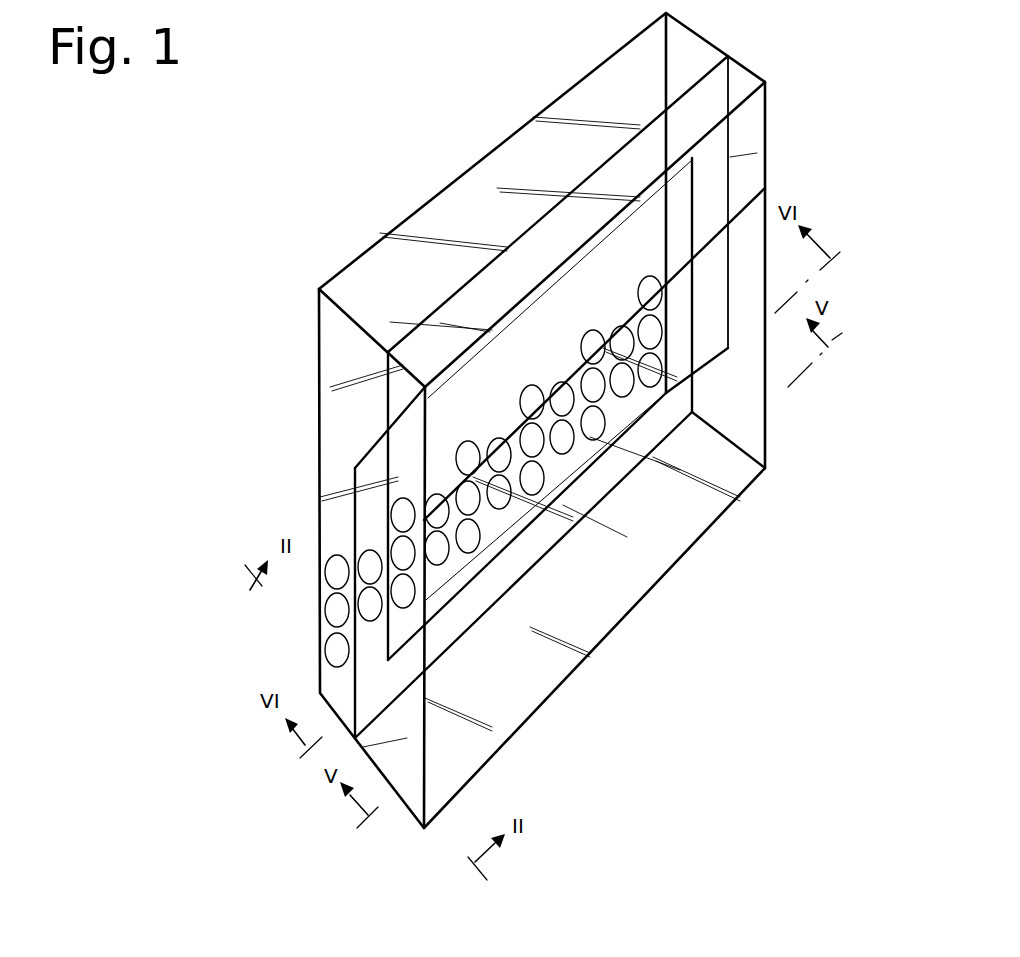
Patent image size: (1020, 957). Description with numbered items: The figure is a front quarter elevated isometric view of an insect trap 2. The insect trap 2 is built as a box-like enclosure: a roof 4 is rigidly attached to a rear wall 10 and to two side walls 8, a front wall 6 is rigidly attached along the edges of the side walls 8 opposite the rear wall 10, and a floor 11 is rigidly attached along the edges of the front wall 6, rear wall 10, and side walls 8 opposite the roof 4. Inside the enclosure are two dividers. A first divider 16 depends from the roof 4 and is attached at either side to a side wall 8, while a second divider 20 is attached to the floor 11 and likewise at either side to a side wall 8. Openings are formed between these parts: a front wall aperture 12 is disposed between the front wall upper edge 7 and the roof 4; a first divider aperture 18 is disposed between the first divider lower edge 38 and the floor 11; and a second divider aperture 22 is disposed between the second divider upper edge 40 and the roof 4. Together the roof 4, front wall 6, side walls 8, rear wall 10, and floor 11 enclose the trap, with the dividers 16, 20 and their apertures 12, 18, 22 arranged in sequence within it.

The insect trap 2 is at (160, 254).
The roof 4 is at (513, 160).
The front wall 6 is at (540, 670).
The front wall upper edge 7 is at (765, 197).
The side walls 8 is at (330, 470).
The rear wall 10 is at (320, 430).
The floor 11 is at (512, 740).
The front wall aperture 12 is at (752, 127).
The first divider 16 is at (578, 477).
The first divider aperture 18 is at (552, 528).
The second divider 20 is at (522, 332).
The second divider aperture 22 is at (558, 247).
The first divider lower edge 38 is at (575, 495).
The second divider upper edge 40 is at (536, 304).